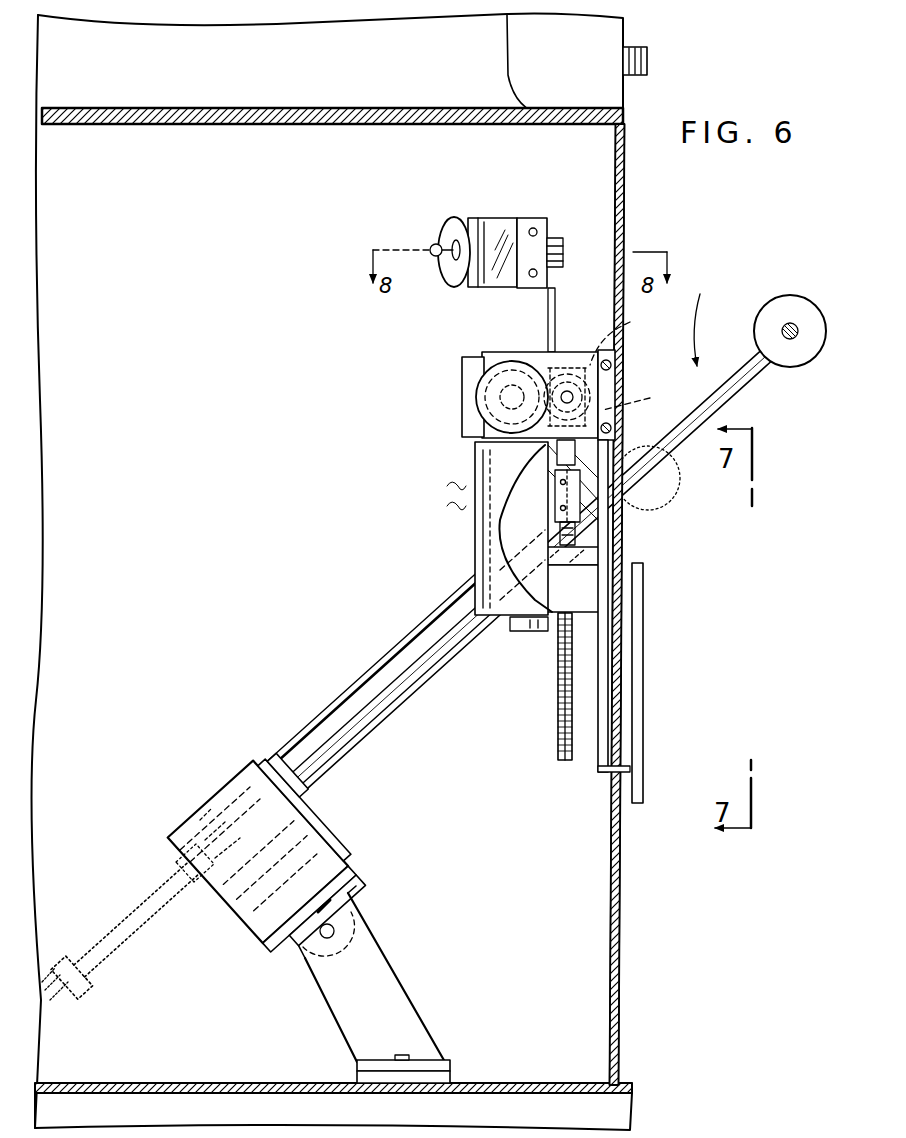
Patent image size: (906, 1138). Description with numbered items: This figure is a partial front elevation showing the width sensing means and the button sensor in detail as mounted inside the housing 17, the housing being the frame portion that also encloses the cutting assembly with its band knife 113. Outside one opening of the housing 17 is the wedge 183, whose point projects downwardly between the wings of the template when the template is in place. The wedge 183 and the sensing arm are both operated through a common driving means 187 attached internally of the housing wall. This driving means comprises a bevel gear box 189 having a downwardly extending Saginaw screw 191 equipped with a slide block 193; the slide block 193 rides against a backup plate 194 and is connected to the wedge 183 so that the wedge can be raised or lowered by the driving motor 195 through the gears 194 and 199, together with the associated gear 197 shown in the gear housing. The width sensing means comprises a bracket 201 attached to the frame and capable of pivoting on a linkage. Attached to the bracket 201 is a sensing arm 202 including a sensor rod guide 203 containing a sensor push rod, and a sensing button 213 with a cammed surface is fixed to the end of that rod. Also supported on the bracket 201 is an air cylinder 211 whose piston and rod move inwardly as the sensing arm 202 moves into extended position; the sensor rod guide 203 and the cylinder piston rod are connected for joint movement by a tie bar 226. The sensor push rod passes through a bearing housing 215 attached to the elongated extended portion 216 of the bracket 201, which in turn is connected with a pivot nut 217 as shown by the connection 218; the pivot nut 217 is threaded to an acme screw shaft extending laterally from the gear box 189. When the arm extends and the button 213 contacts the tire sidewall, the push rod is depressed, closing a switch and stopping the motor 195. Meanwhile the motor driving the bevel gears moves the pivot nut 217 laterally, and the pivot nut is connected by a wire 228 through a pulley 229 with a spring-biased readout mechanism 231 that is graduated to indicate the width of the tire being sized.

The housing 17 is at (621, 906).
The band knife 113 is at (651, 60).
The wedge 183 is at (645, 651).
The common driving means 187 is at (486, 355).
The bevel gear box 189 is at (527, 350).
The Saginaw screw 191 is at (560, 710).
The slide block 193 is at (535, 617).
The backup plate 194 is at (600, 772).
The driving motor 195 is at (477, 538).
The bracket plate 197 is at (622, 382).
The gear 199 is at (480, 402).
The bracket 201 is at (322, 835).
The sensing arm 202 is at (697, 321).
The sensor rod guide 203 is at (746, 366).
The air cylinder 211 is at (440, 653).
The sensing button 213 is at (786, 306).
The bearing housing 215 is at (600, 548).
The elongated extended portion 216 is at (428, 622).
The pivot nut 217 is at (632, 338).
The connection 218 is at (648, 397).
The tie bar 226 is at (132, 916).
The wire 228 is at (556, 318).
The pulley 229 is at (561, 243).
The spring-biased readout mechanism 231 is at (452, 226).